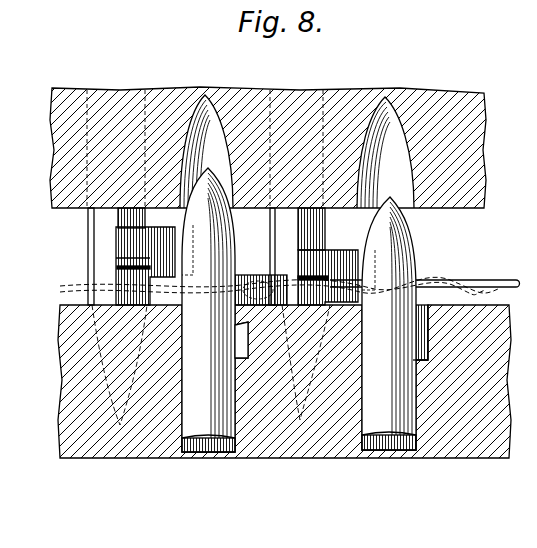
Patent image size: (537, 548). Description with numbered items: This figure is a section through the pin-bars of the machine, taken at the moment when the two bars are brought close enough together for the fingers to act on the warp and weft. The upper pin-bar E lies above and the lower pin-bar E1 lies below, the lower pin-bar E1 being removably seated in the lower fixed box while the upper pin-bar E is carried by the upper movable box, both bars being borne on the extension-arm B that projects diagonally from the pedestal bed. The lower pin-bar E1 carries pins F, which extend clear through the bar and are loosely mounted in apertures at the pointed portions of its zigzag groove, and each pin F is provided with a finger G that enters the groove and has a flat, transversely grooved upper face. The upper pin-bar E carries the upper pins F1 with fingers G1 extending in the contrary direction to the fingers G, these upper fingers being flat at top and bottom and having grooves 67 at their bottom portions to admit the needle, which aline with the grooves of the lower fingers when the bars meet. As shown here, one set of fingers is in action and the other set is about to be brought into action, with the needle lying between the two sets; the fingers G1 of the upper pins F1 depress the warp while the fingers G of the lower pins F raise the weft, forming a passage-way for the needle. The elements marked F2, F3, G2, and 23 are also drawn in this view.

The upper pin-bar E is at (52, 150).
The lower pin-bar E1 is at (60, 395).
The pins F is at (280, 222).
The upper pins F1 is at (112, 216).
The punch guide F2 is at (425, 361).
The punch stop F3 is at (246, 350).
The fingers G is at (262, 275).
The upper fingers G1 is at (130, 246).
The cross head block G2 is at (318, 242).
The grooves 67 is at (117, 268).
The wire 23 is at (431, 276).
The extension-arm B is at (517, 280).